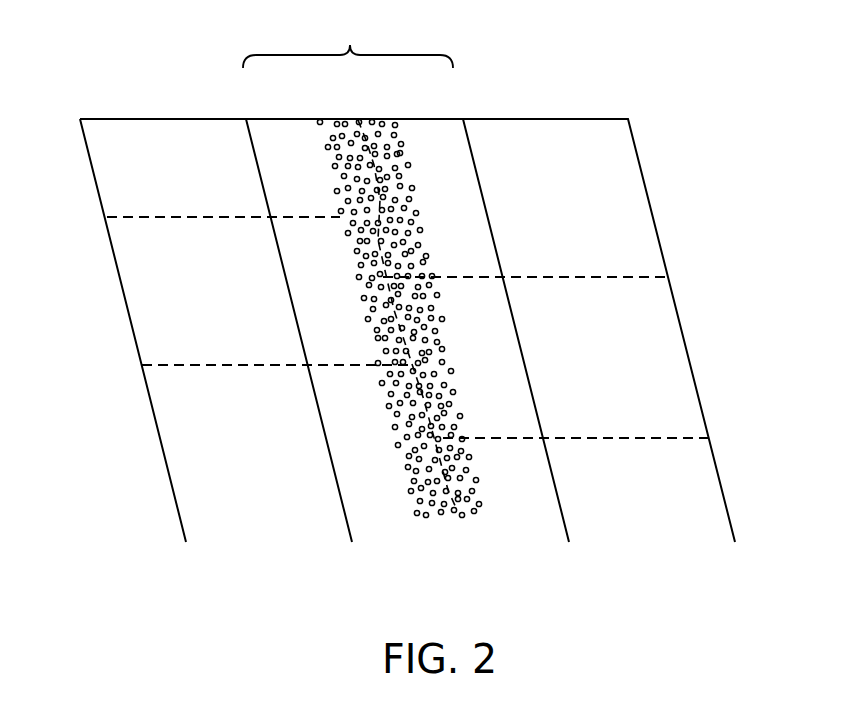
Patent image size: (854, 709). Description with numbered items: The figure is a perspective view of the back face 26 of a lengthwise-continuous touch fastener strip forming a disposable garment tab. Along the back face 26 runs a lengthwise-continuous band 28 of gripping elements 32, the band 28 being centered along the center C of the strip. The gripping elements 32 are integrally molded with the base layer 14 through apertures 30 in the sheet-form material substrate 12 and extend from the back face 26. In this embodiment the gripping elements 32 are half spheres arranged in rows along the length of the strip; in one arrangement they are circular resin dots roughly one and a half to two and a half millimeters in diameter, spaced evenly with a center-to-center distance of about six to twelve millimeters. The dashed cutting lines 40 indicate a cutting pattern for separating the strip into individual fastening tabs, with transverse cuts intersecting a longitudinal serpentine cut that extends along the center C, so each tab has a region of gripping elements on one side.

The material substrate 12 is at (612, 182).
The base layer 14 is at (348, 43).
The back face 26 is at (122, 172).
The band 28 is at (380, 123).
The apertures 30 is at (407, 203).
The gripping elements 32 is at (402, 153).
The transverse cut lines 40 is at (560, 277).